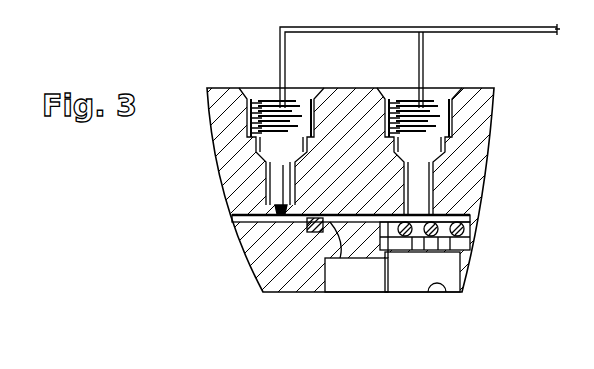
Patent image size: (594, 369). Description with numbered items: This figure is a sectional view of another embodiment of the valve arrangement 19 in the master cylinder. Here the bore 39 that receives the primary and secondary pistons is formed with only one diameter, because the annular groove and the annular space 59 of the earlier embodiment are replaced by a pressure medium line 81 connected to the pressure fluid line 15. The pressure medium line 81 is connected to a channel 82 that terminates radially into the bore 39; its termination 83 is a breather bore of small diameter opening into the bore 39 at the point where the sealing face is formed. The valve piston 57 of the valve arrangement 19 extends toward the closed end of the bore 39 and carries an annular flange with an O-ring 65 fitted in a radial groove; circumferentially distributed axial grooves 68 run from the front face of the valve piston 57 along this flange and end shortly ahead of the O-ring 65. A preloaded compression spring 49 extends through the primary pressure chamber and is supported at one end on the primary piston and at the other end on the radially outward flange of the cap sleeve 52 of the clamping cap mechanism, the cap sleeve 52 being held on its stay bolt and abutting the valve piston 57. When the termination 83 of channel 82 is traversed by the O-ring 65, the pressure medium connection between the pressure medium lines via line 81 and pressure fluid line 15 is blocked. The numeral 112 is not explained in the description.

The valve arrangement 19 is at (497, 141).
The pressure medium line 81 is at (385, 33).
The pressure fluid line 15 is at (432, 108).
The channel 82 is at (283, 176).
The termination 83 is at (274, 210).
The bore 39 is at (245, 217).
The annular chamber 59 is at (270, 224).
The valve piston 57 is at (262, 260).
The O-ring 65 is at (318, 236).
The cavity 112 is at (345, 226).
The axial grooves 68 is at (355, 226).
The compression spring 49 is at (468, 232).
The cap sleeve 52 is at (470, 245).